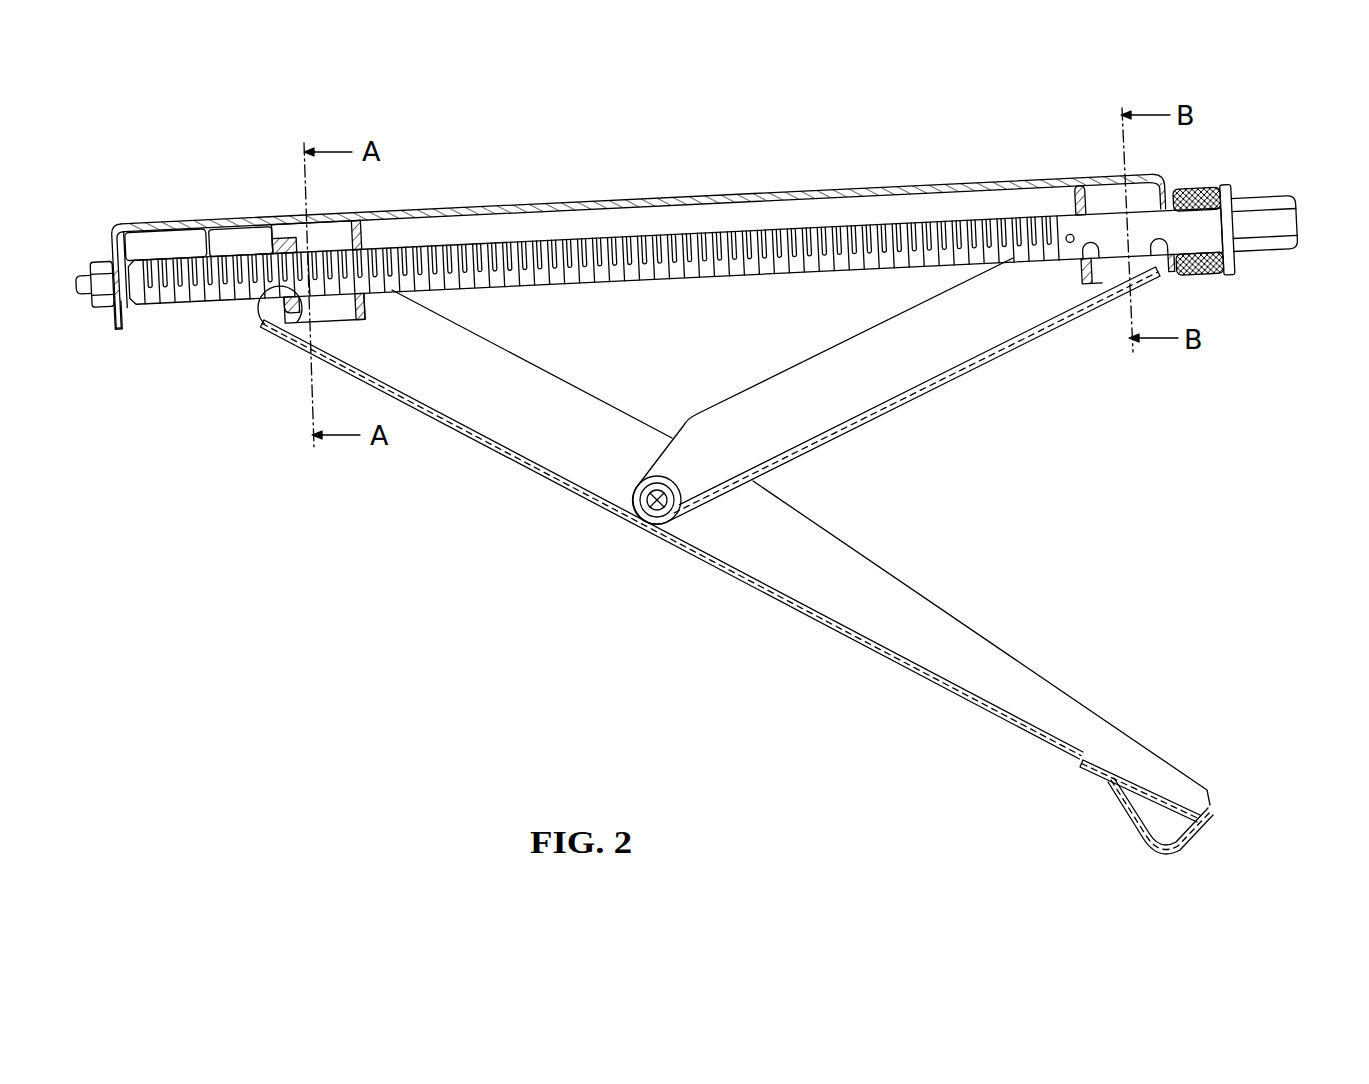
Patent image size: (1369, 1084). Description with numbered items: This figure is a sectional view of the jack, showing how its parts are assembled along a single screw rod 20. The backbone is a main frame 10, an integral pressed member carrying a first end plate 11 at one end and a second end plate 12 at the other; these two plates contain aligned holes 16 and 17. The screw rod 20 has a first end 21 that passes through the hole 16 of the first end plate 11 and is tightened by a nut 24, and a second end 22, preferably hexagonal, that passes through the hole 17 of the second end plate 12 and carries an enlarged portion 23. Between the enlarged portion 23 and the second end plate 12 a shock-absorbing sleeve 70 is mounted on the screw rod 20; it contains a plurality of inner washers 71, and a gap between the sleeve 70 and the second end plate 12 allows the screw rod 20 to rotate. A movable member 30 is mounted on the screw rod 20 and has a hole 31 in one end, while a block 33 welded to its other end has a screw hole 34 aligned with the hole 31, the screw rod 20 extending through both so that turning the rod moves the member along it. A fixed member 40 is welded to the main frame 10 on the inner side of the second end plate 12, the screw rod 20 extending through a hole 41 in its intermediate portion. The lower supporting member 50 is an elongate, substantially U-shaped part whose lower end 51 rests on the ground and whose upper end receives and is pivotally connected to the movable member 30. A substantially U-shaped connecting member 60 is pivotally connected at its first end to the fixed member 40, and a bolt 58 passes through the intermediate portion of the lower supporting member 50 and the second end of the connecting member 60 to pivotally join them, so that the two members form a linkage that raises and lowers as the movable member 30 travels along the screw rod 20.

The main frame 10 is at (690, 196).
The first end plate 11 is at (117, 318).
The second end plate 12 is at (1170, 185).
The hole 16 is at (122, 306).
The hole 17 is at (1158, 262).
The screw rod 20 is at (199, 302).
The first end 21 is at (76, 288).
The second end 22 is at (1282, 252).
The enlarged portion 23 is at (1230, 276).
The nut 24 is at (101, 257).
The movable member 30 is at (362, 228).
The hole 31 is at (400, 290).
The block 33 is at (284, 240).
The screw hole 34 is at (262, 296).
The fixed member 40 is at (1092, 190).
The hole 41 is at (1096, 282).
The lower supporting member 50 is at (738, 574).
The lower end 51 is at (1135, 839).
The bolt 58 is at (650, 512).
The connecting member 60 is at (935, 386).
The shock-absorbing sleeve 70 is at (1208, 274).
The inner washers 71 is at (1207, 188).